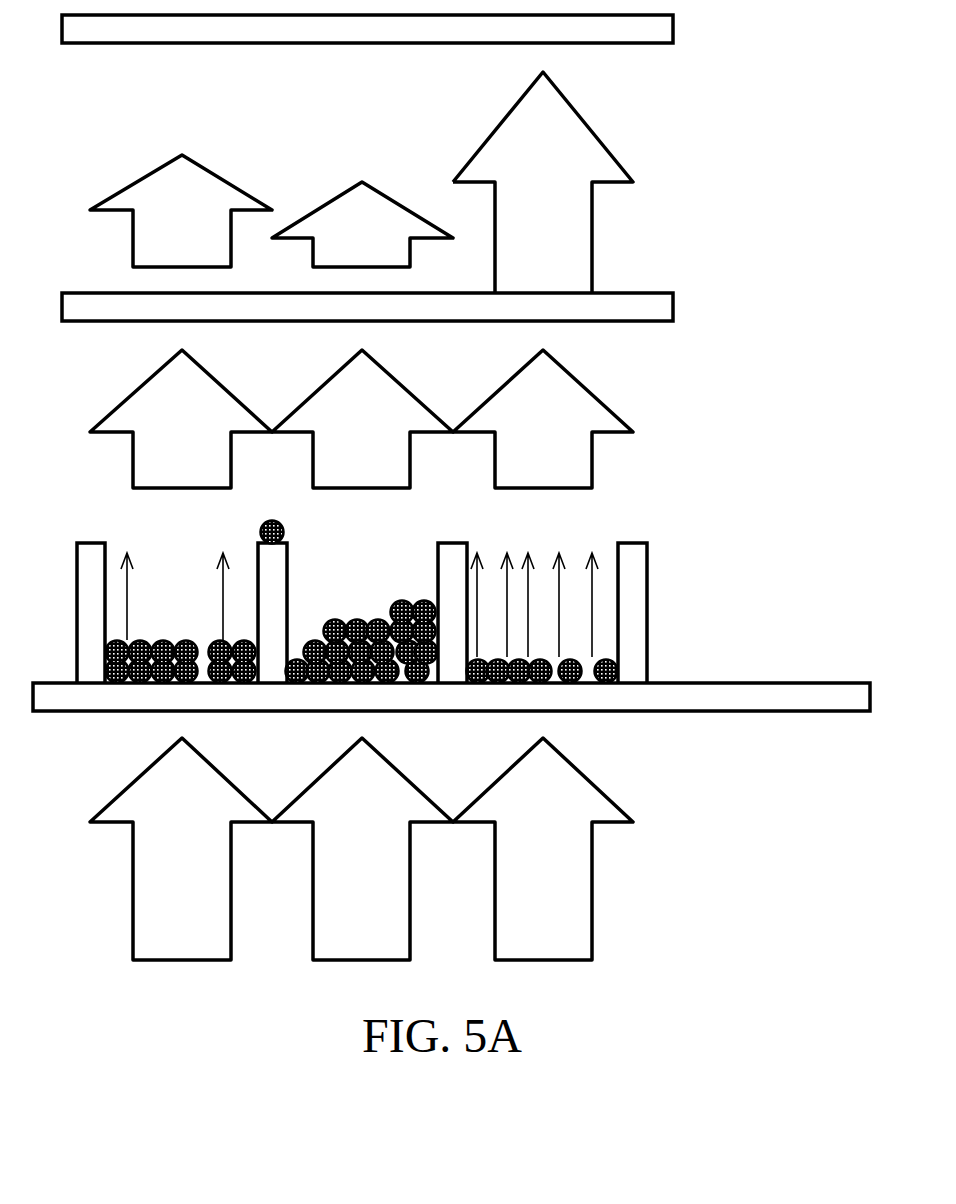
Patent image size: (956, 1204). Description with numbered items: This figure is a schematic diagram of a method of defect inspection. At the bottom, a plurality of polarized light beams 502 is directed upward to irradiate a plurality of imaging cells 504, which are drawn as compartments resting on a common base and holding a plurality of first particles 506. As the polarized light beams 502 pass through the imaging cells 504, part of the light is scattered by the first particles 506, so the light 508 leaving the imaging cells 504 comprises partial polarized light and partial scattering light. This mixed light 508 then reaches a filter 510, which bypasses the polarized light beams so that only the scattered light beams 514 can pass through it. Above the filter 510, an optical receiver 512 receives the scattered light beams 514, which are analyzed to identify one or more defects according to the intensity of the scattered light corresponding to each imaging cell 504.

The polarized light beams 502 is at (137, 779).
The imaging cells 504 is at (150, 528).
The first particles 506 is at (178, 640).
The light passing the imaging cells 508 is at (137, 390).
The filter 510 is at (675, 308).
The optical receiver 512 is at (675, 31).
The scattered light beams 514 is at (137, 182).